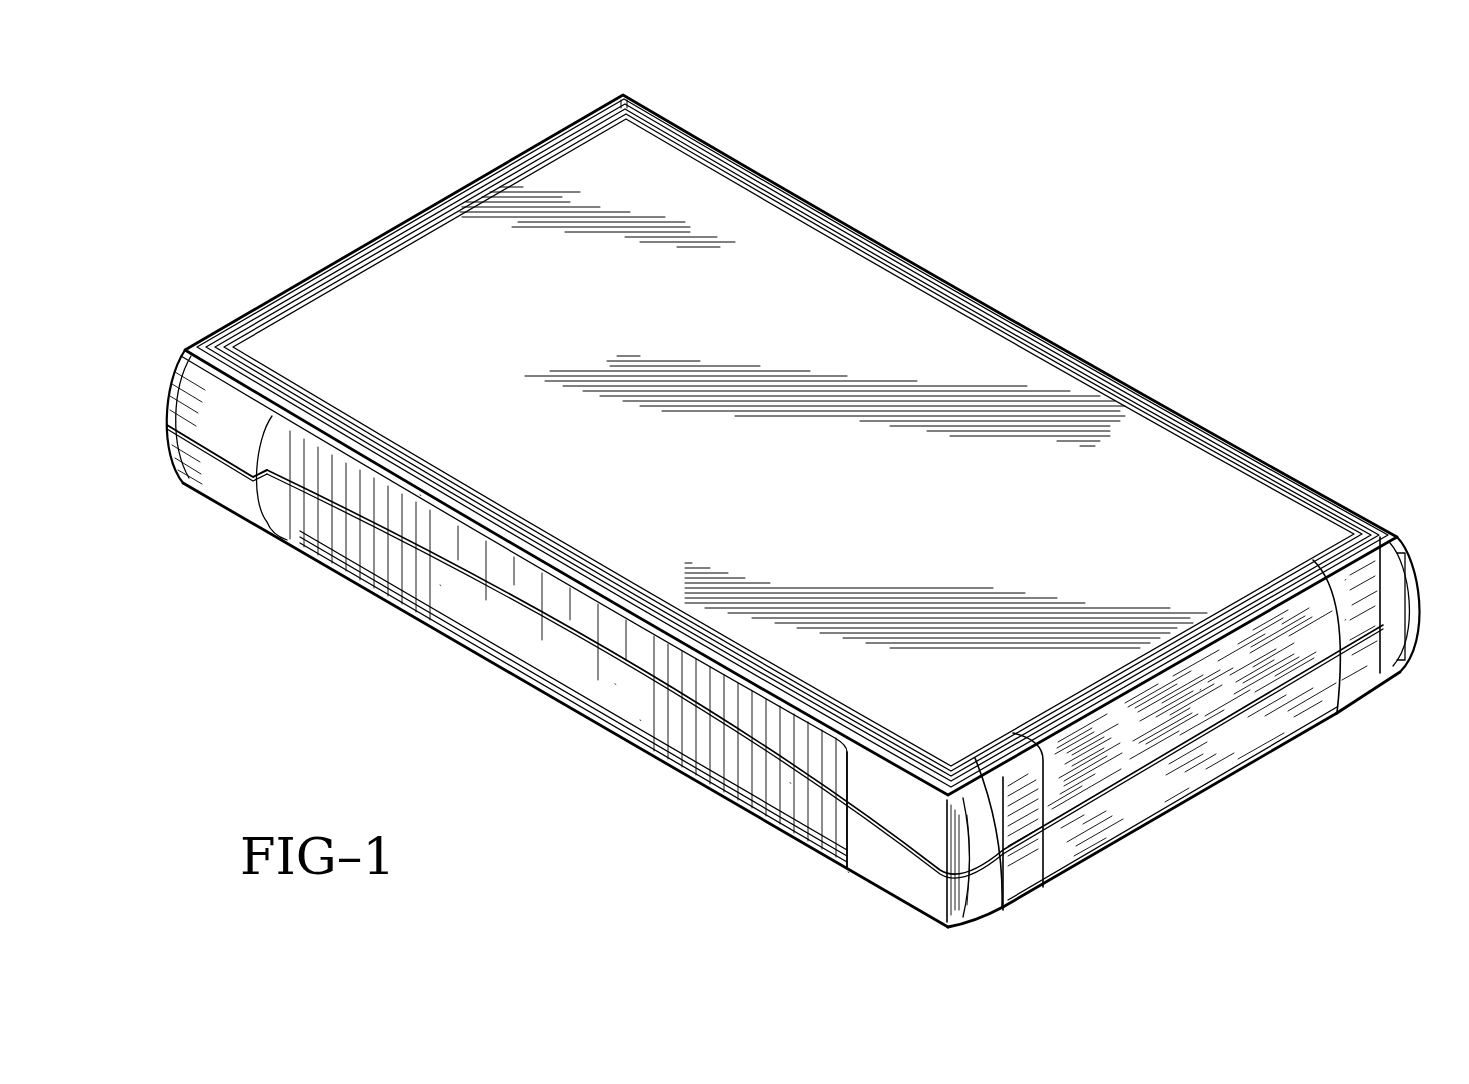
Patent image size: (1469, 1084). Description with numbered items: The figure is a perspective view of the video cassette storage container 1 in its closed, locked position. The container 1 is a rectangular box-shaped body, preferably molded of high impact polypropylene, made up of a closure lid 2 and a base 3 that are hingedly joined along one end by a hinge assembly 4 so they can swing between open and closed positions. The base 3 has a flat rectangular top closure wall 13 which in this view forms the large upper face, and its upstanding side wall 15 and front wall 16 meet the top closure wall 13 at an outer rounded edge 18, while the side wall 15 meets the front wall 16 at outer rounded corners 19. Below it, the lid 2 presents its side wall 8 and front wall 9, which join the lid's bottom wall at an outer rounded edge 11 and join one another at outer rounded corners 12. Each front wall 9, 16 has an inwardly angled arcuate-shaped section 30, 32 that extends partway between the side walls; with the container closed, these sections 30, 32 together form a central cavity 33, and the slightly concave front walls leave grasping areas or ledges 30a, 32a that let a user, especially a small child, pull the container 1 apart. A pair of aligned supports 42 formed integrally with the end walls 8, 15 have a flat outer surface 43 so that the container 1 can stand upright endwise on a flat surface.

The video cassette storage container 1 is at (1052, 290).
The closure lid 2 is at (468, 628).
The base 3 is at (562, 612).
The hinge assembly 4 is at (1430, 565).
The side wall 8 is at (1077, 830).
The front wall 9 is at (877, 863).
The outer rounded edge 11 is at (1208, 780).
The outer rounded corners 12 is at (170, 463).
The top closure wall 13 is at (885, 302).
The side wall 15 is at (1230, 697).
The front wall 16 is at (876, 808).
The outer rounded edge 18 is at (1077, 723).
The outer rounded corners 19 is at (168, 391).
The inwardly angled arcuate-shaped section 30 is at (418, 590).
The grasping area 30a is at (688, 768).
The inwardly angled arcuate-shaped section 32 is at (628, 645).
The grasping area 32a is at (428, 503).
The central cavity 33 is at (665, 705).
The supports 42 is at (1360, 557).
The flat outer surface 43 is at (1027, 868).